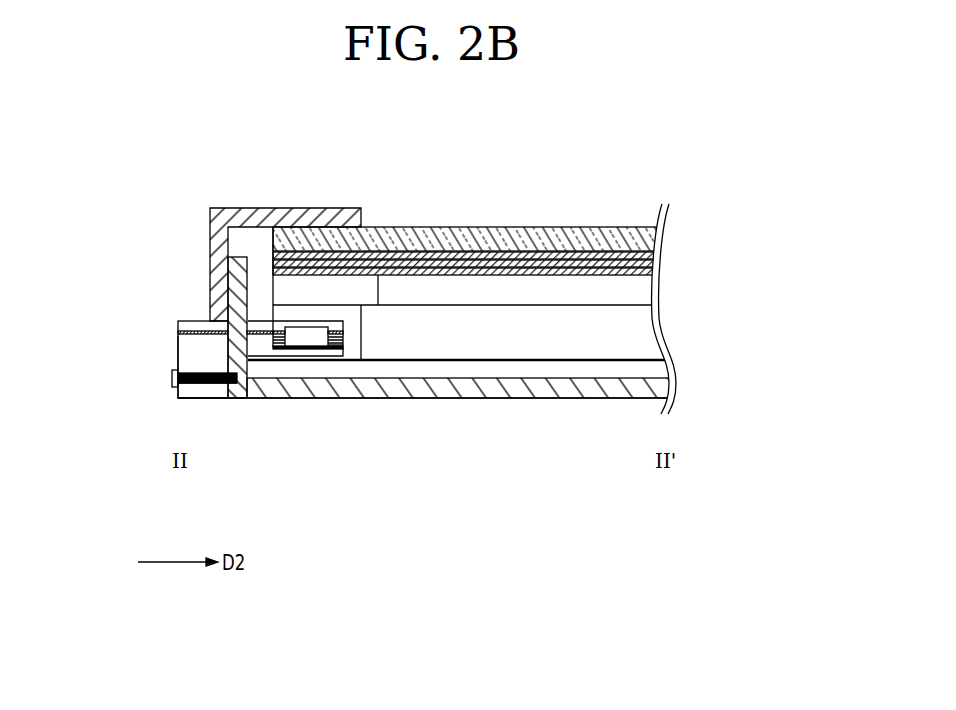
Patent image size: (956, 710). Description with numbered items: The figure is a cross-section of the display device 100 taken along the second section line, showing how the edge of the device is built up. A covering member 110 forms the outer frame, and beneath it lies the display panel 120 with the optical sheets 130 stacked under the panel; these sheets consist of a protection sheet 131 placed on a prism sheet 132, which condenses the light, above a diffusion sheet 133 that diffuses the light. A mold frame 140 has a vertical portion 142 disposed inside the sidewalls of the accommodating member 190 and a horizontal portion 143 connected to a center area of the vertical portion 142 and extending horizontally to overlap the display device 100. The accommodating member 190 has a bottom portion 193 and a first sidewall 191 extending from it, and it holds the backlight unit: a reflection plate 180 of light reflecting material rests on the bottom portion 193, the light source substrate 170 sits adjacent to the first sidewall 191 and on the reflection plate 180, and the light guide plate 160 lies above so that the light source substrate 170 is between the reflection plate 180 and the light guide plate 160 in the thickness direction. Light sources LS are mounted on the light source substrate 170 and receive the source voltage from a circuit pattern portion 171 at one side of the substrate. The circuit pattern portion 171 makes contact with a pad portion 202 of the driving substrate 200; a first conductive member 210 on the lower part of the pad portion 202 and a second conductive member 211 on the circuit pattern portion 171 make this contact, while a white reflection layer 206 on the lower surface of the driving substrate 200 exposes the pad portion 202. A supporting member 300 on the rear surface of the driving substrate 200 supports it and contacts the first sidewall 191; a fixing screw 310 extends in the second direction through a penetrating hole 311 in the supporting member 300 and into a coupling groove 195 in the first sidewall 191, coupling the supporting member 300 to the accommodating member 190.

The display device 100 is at (605, 157).
The covering member 110 is at (220, 257).
The display panel 120 is at (642, 237).
The optical sheets 130 is at (541, 278).
The protection sheet 131 is at (642, 255).
The prism sheet 132 is at (642, 262).
The diffusion sheet 133 is at (642, 270).
The mold frame 140 is at (310, 228).
The vertical portion 142 is at (258, 232).
The horizontal portion 143 is at (323, 282).
The light guide plate 160 is at (653, 338).
The light source substrate 170 is at (273, 355).
The circuit pattern portion 171 is at (303, 350).
The reflection plate 180 is at (660, 364).
The accommodating member 190 is at (553, 400).
The first sidewall 191 is at (236, 279).
The bottom portion 193 is at (660, 388).
The coupling groove 195 is at (237, 396).
The driving substrate 200 is at (178, 322).
The pad portion 202 is at (343, 345).
The reflection layer 206 is at (190, 333).
The first conductive member 210 is at (345, 333).
The second conductive member 211 is at (345, 339).
The supporting member 300 is at (190, 355).
The fixing screw 310 is at (172, 380).
The penetrating hole 311 is at (205, 385).
The light source LS is at (318, 338).